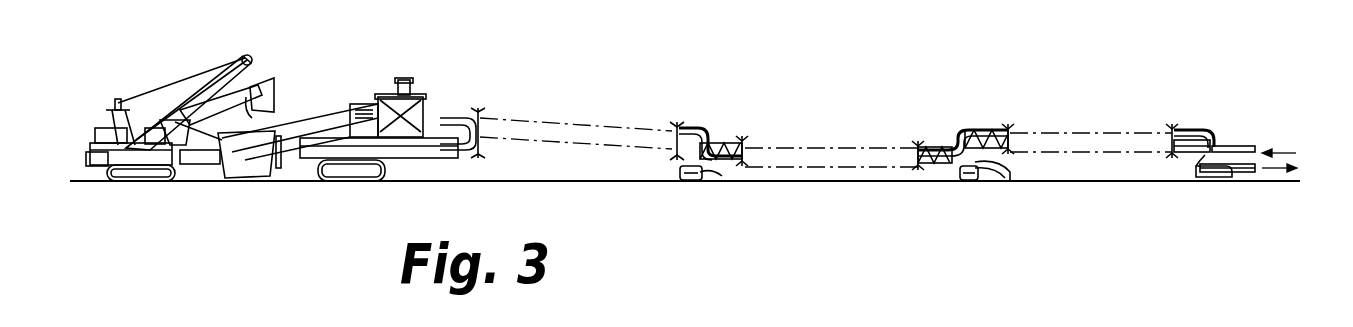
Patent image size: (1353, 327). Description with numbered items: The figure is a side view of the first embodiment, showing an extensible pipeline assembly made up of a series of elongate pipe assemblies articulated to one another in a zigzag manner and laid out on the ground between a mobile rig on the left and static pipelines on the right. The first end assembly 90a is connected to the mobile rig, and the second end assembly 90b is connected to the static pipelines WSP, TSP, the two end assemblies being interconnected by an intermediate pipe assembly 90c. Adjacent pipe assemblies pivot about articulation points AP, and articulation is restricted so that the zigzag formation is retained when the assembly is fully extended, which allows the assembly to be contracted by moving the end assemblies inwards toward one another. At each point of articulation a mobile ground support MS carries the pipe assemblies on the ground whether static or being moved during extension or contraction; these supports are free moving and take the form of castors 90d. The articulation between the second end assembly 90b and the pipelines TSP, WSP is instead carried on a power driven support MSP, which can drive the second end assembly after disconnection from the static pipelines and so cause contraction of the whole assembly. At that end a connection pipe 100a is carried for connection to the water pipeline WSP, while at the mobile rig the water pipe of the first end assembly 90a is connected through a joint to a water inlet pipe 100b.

The first end assembly 90a is at (548, 123).
The second end assembly 90b is at (1093, 132).
The intermediate pipe assembly 90c is at (852, 147).
The castors 90d is at (704, 182).
The connection pipe 100a is at (1238, 146).
The water inlet pipe 100b is at (1247, 173).
The articulation points AP is at (687, 108).
The static water pipeline WSP is at (722, 150).
The static tarsand slurry pipeline TSP is at (820, 168).
The mobile ground support MS is at (684, 189).
The power driven support MSP is at (1192, 190).